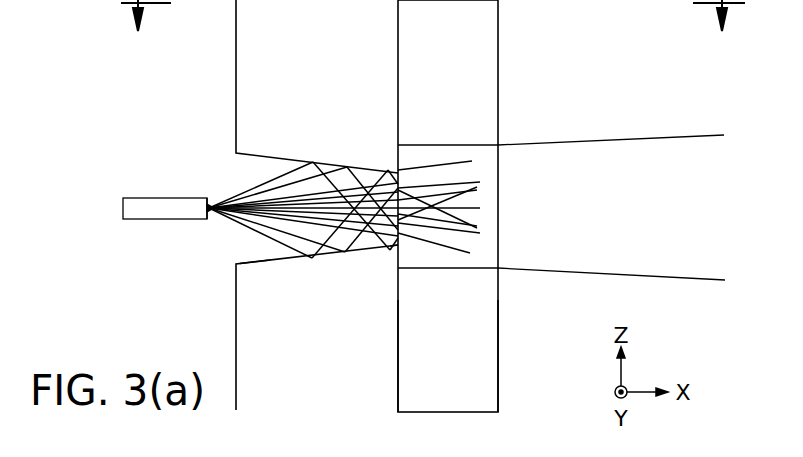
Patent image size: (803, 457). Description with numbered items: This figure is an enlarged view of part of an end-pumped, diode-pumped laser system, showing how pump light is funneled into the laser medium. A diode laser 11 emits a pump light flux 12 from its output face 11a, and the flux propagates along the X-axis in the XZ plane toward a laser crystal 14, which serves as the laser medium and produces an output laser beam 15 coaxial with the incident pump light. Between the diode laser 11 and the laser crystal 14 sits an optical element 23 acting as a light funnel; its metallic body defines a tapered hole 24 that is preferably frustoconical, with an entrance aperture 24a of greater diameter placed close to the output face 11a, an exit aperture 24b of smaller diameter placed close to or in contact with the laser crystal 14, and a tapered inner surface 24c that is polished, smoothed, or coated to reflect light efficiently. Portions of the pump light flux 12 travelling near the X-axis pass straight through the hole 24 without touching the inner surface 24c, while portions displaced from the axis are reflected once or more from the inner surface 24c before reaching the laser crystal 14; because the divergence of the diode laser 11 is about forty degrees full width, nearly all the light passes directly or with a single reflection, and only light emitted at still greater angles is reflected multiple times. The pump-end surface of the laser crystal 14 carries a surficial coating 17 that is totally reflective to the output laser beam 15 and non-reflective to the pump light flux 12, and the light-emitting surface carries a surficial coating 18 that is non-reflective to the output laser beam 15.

The diode laser 11 is at (165, 207).
The output face 11a is at (209, 219).
The pump light flux 12 is at (242, 198).
The laser crystal 14 is at (468, 57).
The output laser beam 15 is at (572, 245).
The surficial coating 17 is at (398, 353).
The surficial coating 18 is at (498, 365).
The optical element 23 is at (313, 354).
The tapered hole 24 is at (256, 172).
The entrance aperture 24a is at (243, 245).
The exit aperture 24b is at (400, 236).
The tapered inner surface 24c is at (257, 263).